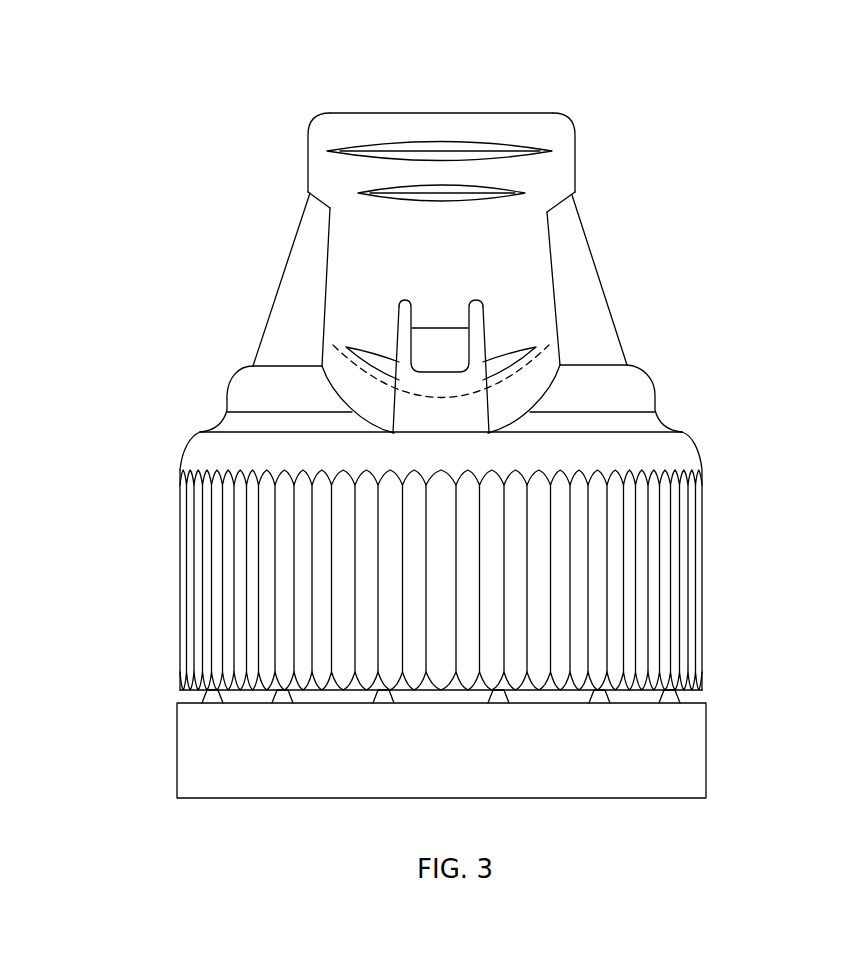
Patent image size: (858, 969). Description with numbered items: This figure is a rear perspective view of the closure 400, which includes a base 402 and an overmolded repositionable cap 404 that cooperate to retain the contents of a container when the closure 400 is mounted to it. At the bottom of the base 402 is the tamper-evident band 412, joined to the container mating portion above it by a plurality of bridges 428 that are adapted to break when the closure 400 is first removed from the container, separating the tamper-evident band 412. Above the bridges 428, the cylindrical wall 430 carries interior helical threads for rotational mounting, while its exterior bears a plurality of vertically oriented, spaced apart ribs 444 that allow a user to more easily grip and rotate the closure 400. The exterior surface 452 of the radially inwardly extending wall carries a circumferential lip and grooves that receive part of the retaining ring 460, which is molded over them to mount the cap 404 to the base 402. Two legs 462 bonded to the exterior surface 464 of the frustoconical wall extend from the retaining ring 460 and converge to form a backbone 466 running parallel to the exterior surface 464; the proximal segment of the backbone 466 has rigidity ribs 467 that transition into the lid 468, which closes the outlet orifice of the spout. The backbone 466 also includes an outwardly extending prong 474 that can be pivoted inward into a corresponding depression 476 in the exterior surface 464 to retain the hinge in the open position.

The closure 400 is at (778, 152).
The base 402 is at (680, 448).
The repositionable cap 404 is at (556, 130).
The tamper-evident band 412 is at (695, 765).
The bridges 428 is at (384, 695).
The cylindrical wall 430 is at (178, 553).
The ribs 444 is at (705, 578).
The exterior surface of the radially inwardly extending wall 452 is at (198, 455).
The retaining ring 460 is at (642, 397).
The legs 462 is at (342, 312).
The exterior surface of the frustoconical wall 464 is at (286, 272).
The backbone 466 is at (442, 248).
The rigidity ribs 467 is at (353, 156).
The lid 468 is at (447, 118).
The prong 474 is at (455, 362).
The depression 476 is at (455, 395).